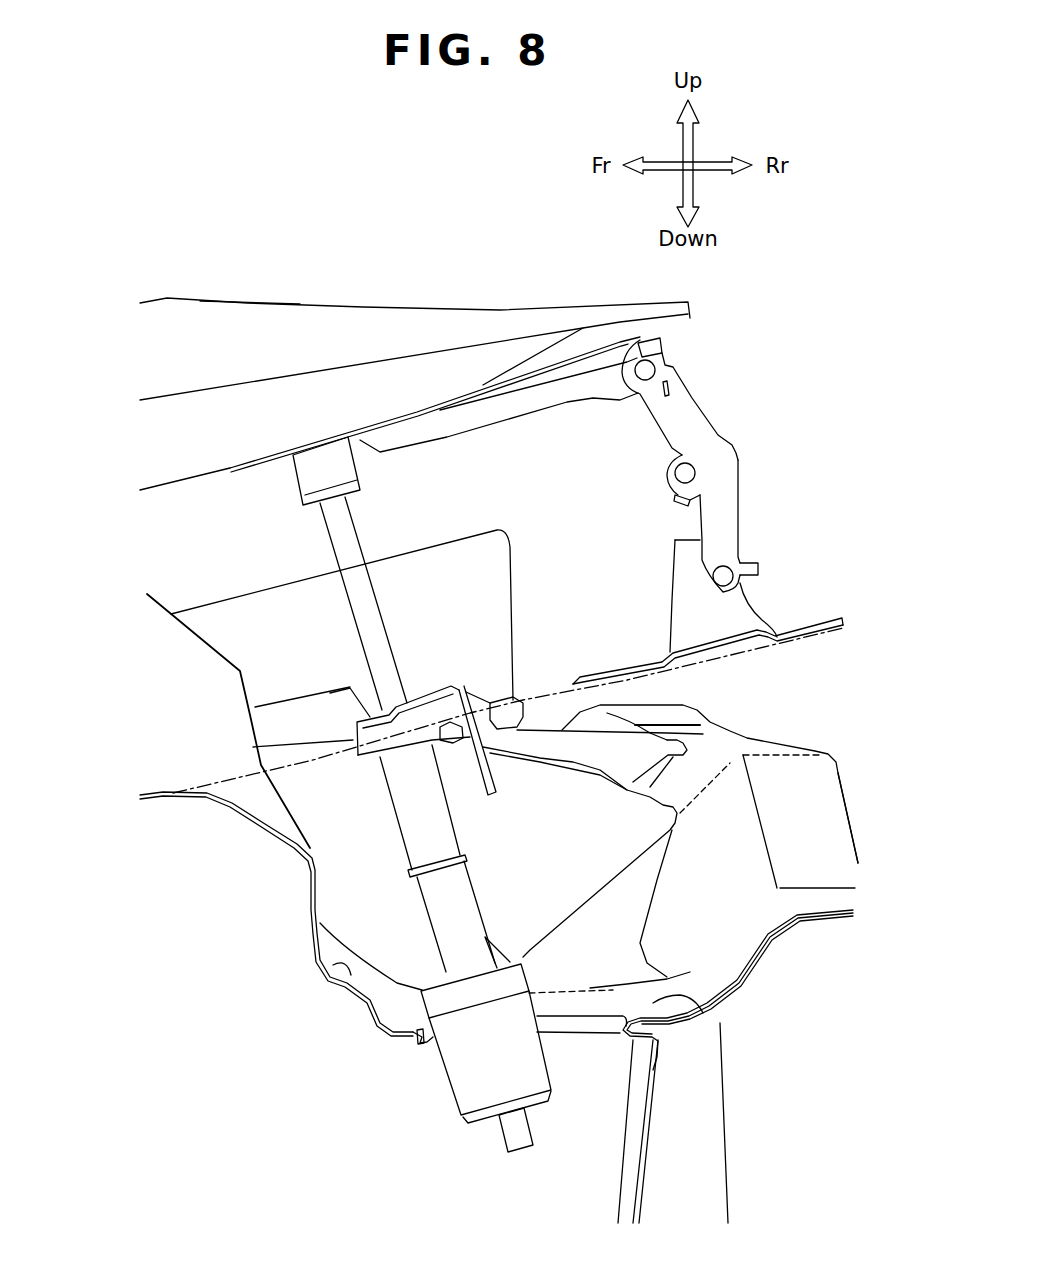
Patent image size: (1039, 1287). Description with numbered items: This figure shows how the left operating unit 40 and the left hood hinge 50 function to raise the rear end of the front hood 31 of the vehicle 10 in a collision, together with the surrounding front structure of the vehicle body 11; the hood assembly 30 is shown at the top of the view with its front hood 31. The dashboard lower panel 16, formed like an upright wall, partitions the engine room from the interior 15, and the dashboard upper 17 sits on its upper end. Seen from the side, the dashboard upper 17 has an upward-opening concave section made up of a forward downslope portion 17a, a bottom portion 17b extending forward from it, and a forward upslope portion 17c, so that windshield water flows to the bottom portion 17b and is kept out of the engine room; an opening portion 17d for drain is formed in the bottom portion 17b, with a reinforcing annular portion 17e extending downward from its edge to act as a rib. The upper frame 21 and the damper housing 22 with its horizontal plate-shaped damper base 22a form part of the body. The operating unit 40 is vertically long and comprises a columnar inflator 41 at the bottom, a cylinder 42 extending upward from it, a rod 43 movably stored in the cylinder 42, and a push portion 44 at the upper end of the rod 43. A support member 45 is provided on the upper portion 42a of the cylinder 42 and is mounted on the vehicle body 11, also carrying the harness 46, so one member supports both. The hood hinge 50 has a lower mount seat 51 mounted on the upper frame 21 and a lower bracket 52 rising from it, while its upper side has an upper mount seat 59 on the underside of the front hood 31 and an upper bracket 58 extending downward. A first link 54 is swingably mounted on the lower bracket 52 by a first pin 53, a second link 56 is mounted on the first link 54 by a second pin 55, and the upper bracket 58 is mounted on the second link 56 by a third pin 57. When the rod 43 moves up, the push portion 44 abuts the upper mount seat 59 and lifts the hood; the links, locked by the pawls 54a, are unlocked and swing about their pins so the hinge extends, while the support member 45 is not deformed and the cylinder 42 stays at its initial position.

The vehicle 10 is at (160, 190).
The vehicle body 11 is at (200, 778).
The interior 15 is at (853, 1149).
The dashboard lower panel 16 is at (710, 1168).
The dashboard upper 17 is at (840, 780).
The forward downslope portion 17a is at (727, 960).
The bottom portion 17b is at (703, 1013).
The forward upslope portion 17c is at (330, 975).
The opening portion 17d is at (430, 1042).
The reinforcing annular portion 17e is at (413, 1042).
The upper frame 21 is at (260, 767).
The damper housing 22 is at (234, 885).
The damper base 22a is at (167, 790).
The hood 30 is at (362, 300).
The front hood 31 is at (253, 300).
The operating unit 40 is at (435, 730).
The inflator 41 is at (438, 1092).
The cylinder 42 is at (418, 893).
The upper portion 42a is at (353, 727).
The rod 43 is at (353, 618).
The push portion 44 is at (322, 430).
The support member 45 is at (453, 700).
The harness 46 is at (500, 700).
The hood hinge 50 is at (740, 502).
The lower mount seat 51 is at (818, 622).
The lower bracket 52 is at (748, 603).
The first pin 53 is at (710, 575).
The first link 54 is at (737, 480).
The pawl 54a is at (647, 333).
The second pin 55 is at (667, 473).
The second link 56 is at (703, 413).
The third pin 57 is at (663, 362).
The upper bracket 58 is at (508, 420).
The upper mount seat 59 is at (278, 465).